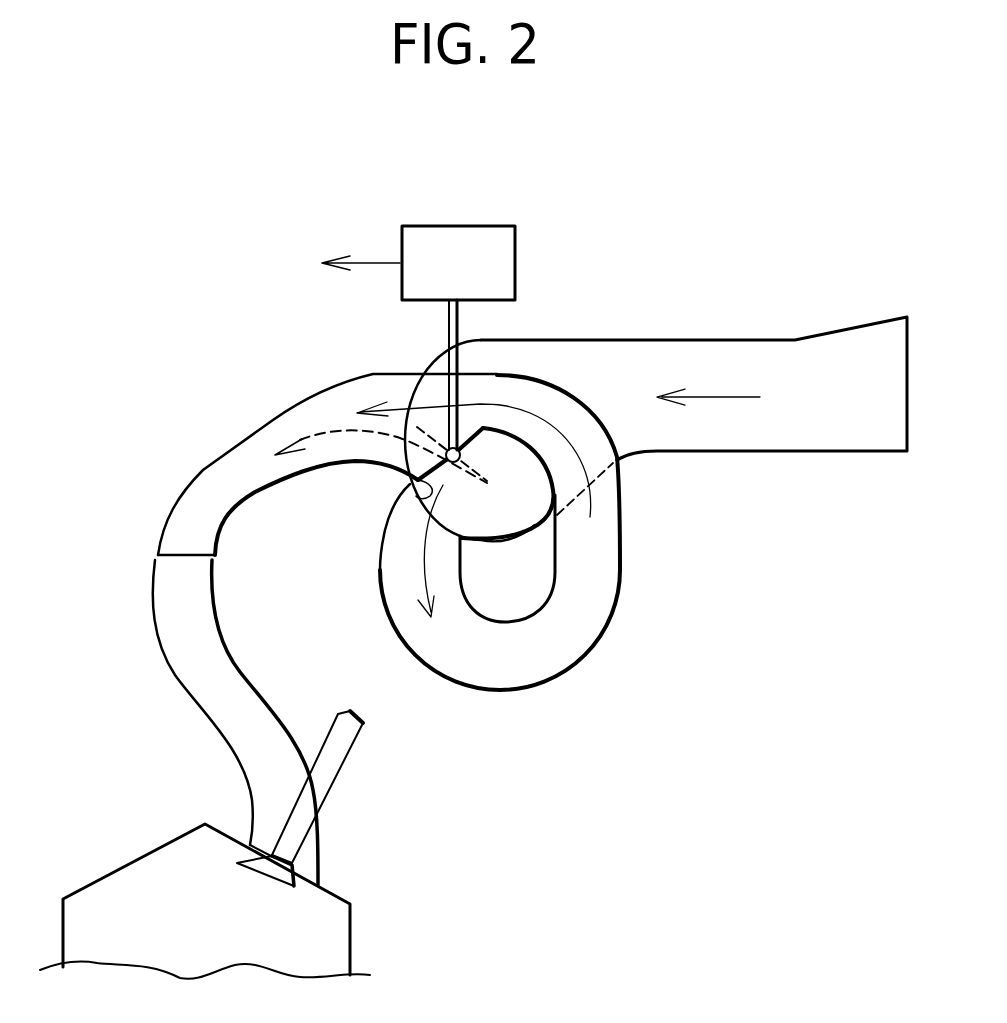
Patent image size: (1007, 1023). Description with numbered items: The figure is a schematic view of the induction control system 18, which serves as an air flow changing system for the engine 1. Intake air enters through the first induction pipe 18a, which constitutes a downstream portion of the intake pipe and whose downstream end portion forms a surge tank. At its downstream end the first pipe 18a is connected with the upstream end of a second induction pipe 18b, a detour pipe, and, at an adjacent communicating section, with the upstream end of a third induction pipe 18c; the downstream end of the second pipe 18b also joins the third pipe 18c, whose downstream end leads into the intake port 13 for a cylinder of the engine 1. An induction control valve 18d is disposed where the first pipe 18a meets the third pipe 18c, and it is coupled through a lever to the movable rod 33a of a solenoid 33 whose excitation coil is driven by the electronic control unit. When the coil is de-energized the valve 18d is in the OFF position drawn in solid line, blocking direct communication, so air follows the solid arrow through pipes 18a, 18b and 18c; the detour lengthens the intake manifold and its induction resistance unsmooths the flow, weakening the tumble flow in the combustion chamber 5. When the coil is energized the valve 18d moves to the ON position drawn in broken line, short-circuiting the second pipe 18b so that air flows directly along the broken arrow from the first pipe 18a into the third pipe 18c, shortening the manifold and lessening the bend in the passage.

The engine 1 is at (103, 860).
The combustion chamber 5 is at (320, 913).
The intake port 13 is at (165, 628).
The induction control system 18 is at (637, 545).
The first induction pipe 18a is at (688, 347).
The second induction pipe 18b is at (551, 659).
The third induction pipe 18c is at (327, 405).
The induction control valve 18d is at (478, 486).
The solenoid 33 is at (517, 228).
The movable rod 33a is at (447, 330).